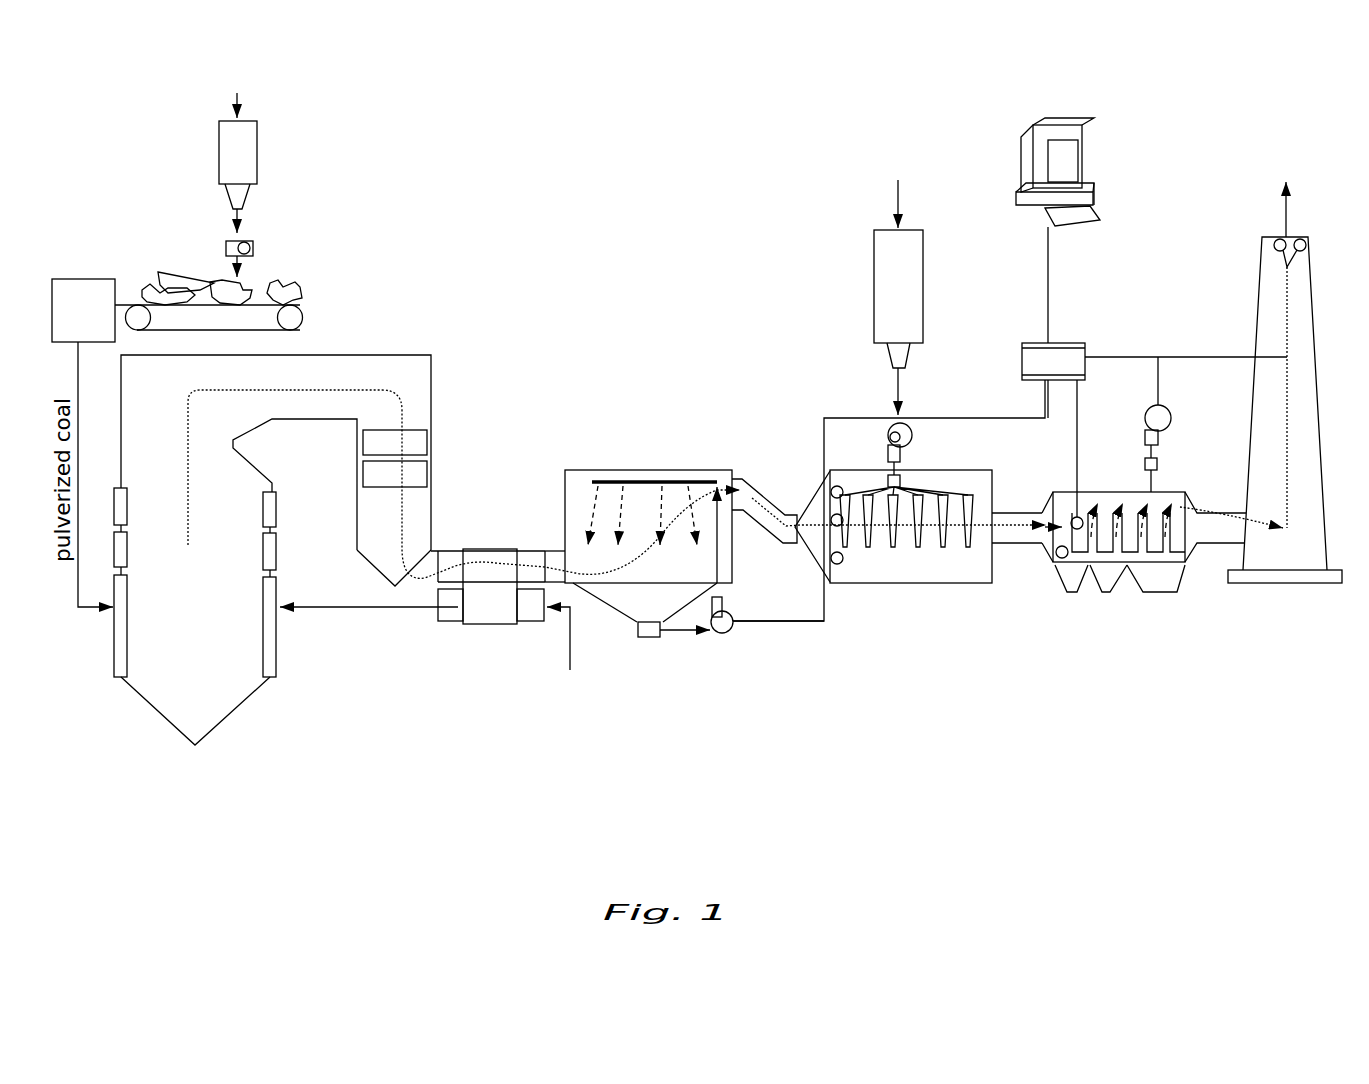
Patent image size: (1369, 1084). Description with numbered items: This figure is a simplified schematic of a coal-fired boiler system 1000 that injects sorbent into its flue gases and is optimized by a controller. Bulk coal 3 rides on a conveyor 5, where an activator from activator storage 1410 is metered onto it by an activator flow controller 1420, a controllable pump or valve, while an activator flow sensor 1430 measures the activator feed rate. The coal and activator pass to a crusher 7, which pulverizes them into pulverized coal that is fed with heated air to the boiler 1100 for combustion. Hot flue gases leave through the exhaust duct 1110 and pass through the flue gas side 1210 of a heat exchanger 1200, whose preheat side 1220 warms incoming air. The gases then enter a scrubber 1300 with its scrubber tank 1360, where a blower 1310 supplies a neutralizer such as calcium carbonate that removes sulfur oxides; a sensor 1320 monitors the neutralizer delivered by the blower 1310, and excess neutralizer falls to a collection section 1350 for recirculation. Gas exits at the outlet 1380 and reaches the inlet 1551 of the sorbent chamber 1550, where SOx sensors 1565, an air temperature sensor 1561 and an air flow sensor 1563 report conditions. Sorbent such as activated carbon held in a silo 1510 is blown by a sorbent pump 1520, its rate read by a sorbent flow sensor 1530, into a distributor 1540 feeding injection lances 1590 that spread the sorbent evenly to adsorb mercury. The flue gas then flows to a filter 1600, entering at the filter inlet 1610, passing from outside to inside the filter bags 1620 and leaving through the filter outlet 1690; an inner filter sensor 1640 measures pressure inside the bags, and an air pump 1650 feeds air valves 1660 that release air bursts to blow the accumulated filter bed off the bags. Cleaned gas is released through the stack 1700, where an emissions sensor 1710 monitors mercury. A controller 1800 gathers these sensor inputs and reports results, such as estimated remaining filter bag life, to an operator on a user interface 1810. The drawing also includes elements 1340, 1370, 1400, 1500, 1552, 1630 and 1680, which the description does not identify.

The bulk coal 3 is at (305, 279).
The conveyor 5 is at (303, 323).
The crusher 7 is at (60, 278).
The coal-fired boiler system 1000 is at (660, 202).
The boiler 1100 is at (199, 748).
The exhaust duct 1110 is at (387, 357).
The heat exchanger 1200 is at (502, 711).
The flue gas side 1210 is at (457, 548).
The preheat side 1220 is at (455, 622).
The scrubber 1300 is at (651, 711).
The blower 1310 is at (732, 617).
The neutralizer flow sensor 1320 is at (732, 632).
The particulate flow arrows 1340 is at (665, 543).
The collection section 1350 is at (650, 637).
The scrubber tank 1360 is at (578, 470).
The flue gas inlet duct 1370 is at (563, 552).
The outlet 1380 is at (743, 457).
The activator injection system 1400 is at (188, 190).
The activator storage 1410 is at (258, 157).
The activator flow controller 1420 is at (253, 243).
The activator flow sensor 1430 is at (250, 243).
The sorbent injection section 1500 is at (888, 711).
The silo 1510 is at (923, 285).
The sorbent pump 1520 is at (911, 426).
The sorbent flow sensor 1530 is at (910, 438).
The distributor 1540 is at (901, 479).
The sorbent chamber 1550 is at (953, 583).
The inlet 1551 is at (800, 517).
The chamber outlet 1552 is at (993, 547).
The air temperature sensor 1561 is at (840, 486).
The air flow sensor 1563 is at (830, 527).
The SOx sensors 1565 is at (840, 560).
The injection lance 1590 is at (968, 547).
The filter 1600 is at (1125, 711).
The filter inlet 1610 is at (1042, 546).
The filter bags 1620 is at (1133, 547).
The inlet sensor 1630 is at (1062, 558).
The inner filter sensor 1640 is at (1082, 512).
The air pump 1650 is at (1170, 413).
The air valves 1660 is at (1157, 463).
The collection hoppers 1680 is at (1128, 580).
The filter outlet 1690 is at (1210, 495).
The stack 1700 is at (1303, 711).
The Hg emissions sensor 1710 is at (1316, 228).
The controller 1800 is at (1067, 342).
The user interface 1810 is at (1085, 151).